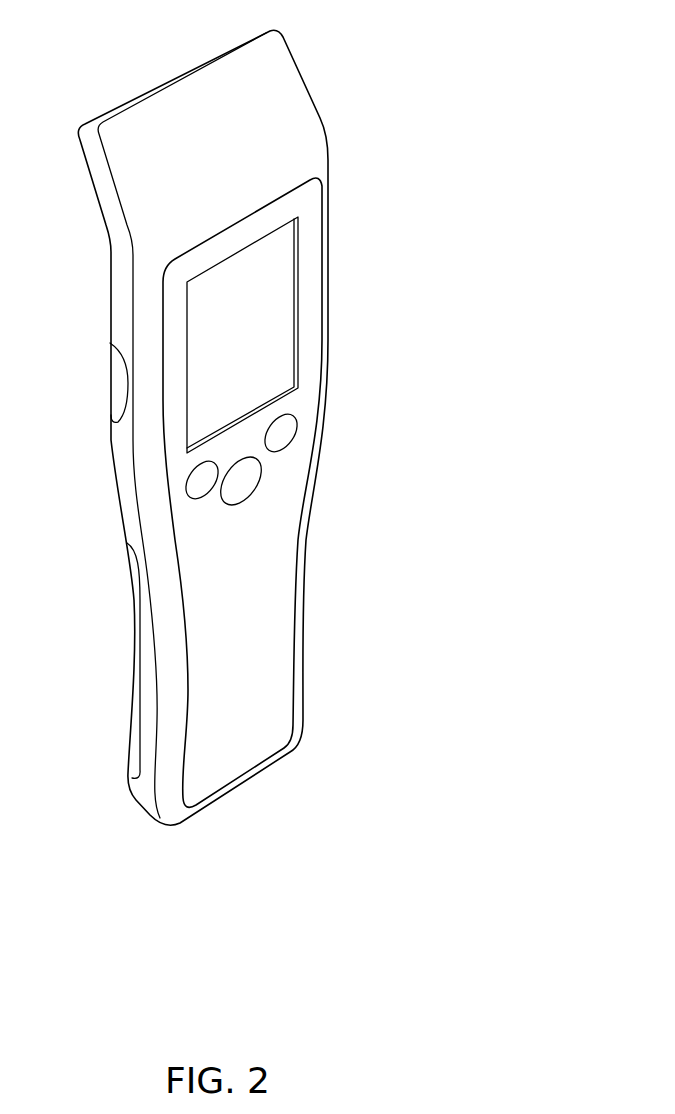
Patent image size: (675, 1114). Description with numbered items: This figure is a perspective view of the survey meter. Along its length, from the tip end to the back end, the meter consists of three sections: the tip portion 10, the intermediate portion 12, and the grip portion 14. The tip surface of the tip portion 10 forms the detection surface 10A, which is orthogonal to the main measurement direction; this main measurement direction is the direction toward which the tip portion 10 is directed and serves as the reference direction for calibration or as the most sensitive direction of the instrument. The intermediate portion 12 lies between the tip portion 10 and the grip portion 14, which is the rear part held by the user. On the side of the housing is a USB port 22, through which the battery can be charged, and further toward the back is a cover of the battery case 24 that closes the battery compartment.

The tip portion 10 is at (282, 107).
The detection surface 10A is at (160, 85).
The intermediate portion 12 is at (330, 288).
The grip portion 14 is at (300, 587).
The USB port 22 is at (122, 387).
The cover of battery case 24 is at (138, 685).